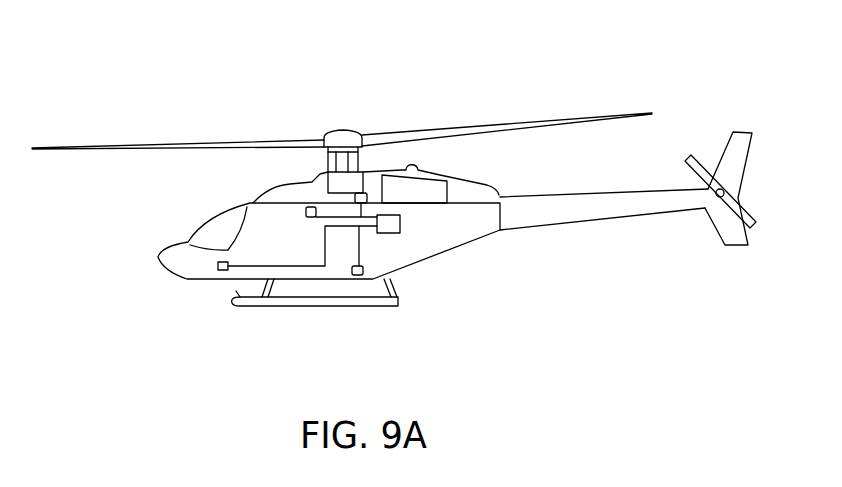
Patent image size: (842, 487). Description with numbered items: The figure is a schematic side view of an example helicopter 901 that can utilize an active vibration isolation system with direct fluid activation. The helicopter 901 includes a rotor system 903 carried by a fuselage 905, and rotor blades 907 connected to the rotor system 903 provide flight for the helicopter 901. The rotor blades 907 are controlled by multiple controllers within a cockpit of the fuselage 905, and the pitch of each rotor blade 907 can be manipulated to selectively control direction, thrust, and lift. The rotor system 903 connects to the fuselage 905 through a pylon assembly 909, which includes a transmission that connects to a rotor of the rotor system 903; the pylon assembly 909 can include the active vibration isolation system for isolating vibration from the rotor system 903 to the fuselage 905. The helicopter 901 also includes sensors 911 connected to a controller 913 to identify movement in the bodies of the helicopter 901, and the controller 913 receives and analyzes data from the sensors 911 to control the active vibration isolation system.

The helicopter 901 is at (162, 89).
The rotor system 903 is at (356, 104).
The fuselage 905 is at (185, 276).
The rotor blades 907 is at (597, 118).
The pylon assembly 909 is at (303, 181).
The sensors 911 is at (344, 278).
The controller 913 is at (400, 224).